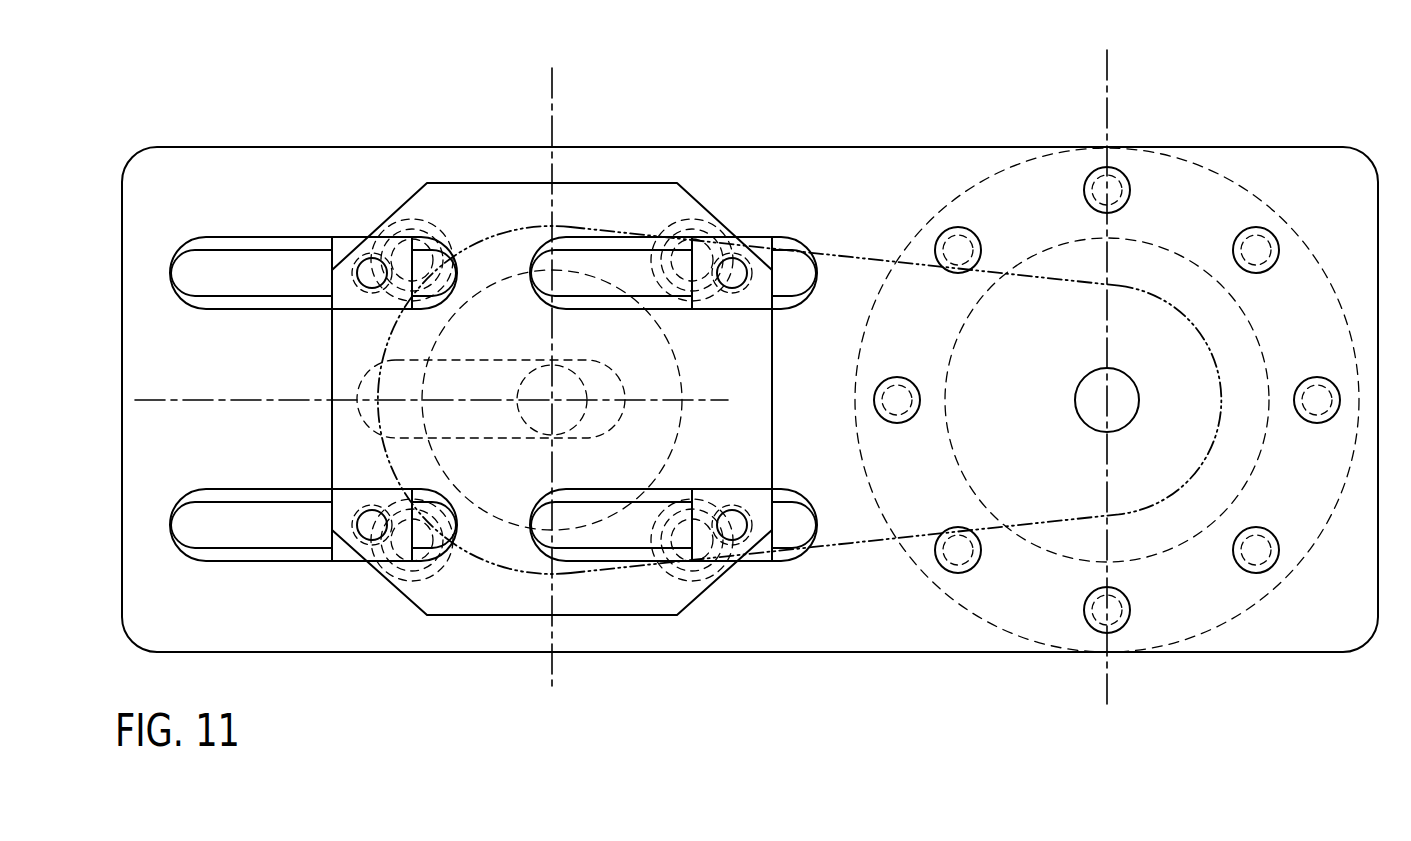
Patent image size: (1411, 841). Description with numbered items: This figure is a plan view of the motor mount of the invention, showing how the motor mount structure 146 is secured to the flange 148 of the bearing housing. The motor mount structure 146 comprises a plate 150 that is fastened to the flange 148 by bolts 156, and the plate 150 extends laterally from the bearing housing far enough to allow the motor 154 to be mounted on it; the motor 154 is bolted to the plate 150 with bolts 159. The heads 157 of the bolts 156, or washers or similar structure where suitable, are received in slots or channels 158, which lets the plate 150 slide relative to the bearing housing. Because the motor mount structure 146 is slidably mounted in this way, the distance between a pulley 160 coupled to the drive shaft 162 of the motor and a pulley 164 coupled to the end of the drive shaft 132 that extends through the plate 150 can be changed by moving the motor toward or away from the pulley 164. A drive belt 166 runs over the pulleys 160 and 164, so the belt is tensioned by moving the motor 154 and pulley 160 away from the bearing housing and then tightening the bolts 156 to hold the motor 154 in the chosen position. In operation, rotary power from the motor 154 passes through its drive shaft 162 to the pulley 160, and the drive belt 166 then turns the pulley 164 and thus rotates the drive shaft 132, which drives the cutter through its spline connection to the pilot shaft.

The drive shaft 132 is at (517, 414).
The motor mount structure 146 is at (690, 142).
The flange 148 is at (430, 183).
The plate 150 is at (1360, 152).
The motor 154 is at (1224, 176).
The bolts 156 is at (360, 258).
The heads 157 is at (327, 262).
The slots or channels 158 is at (222, 243).
The bolts 159 is at (1086, 196).
The pulley 160 is at (1272, 366).
The drive shaft 162 is at (1090, 374).
The pulley 164 is at (502, 233).
The drive belt 166 is at (851, 546).